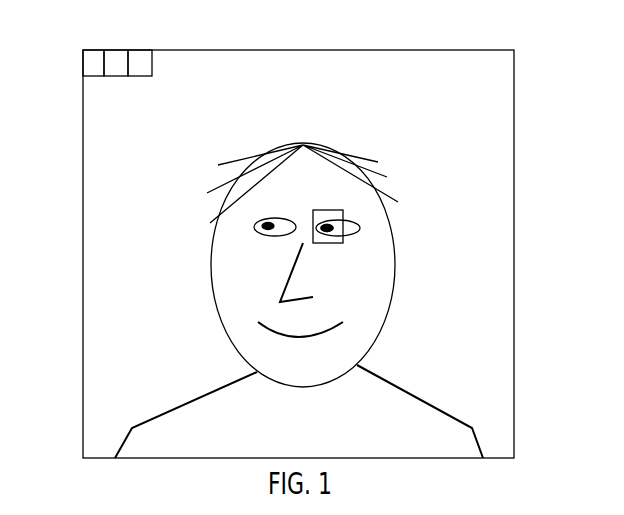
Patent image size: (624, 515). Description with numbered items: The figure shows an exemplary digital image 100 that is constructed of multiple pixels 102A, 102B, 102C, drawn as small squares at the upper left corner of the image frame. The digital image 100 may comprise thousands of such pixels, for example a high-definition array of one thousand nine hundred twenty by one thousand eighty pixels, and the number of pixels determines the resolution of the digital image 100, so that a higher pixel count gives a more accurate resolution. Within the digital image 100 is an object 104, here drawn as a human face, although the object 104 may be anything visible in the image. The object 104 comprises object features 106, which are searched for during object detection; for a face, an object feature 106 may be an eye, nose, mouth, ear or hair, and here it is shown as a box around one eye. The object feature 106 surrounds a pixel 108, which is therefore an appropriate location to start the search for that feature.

The digital image 100 is at (514, 155).
The pixel 102A is at (83, 62).
The pixel 102B is at (117, 52).
The pixel 102C is at (140, 50).
The object 104 is at (213, 263).
The object feature 106 is at (352, 222).
The pixel 108 is at (323, 245).